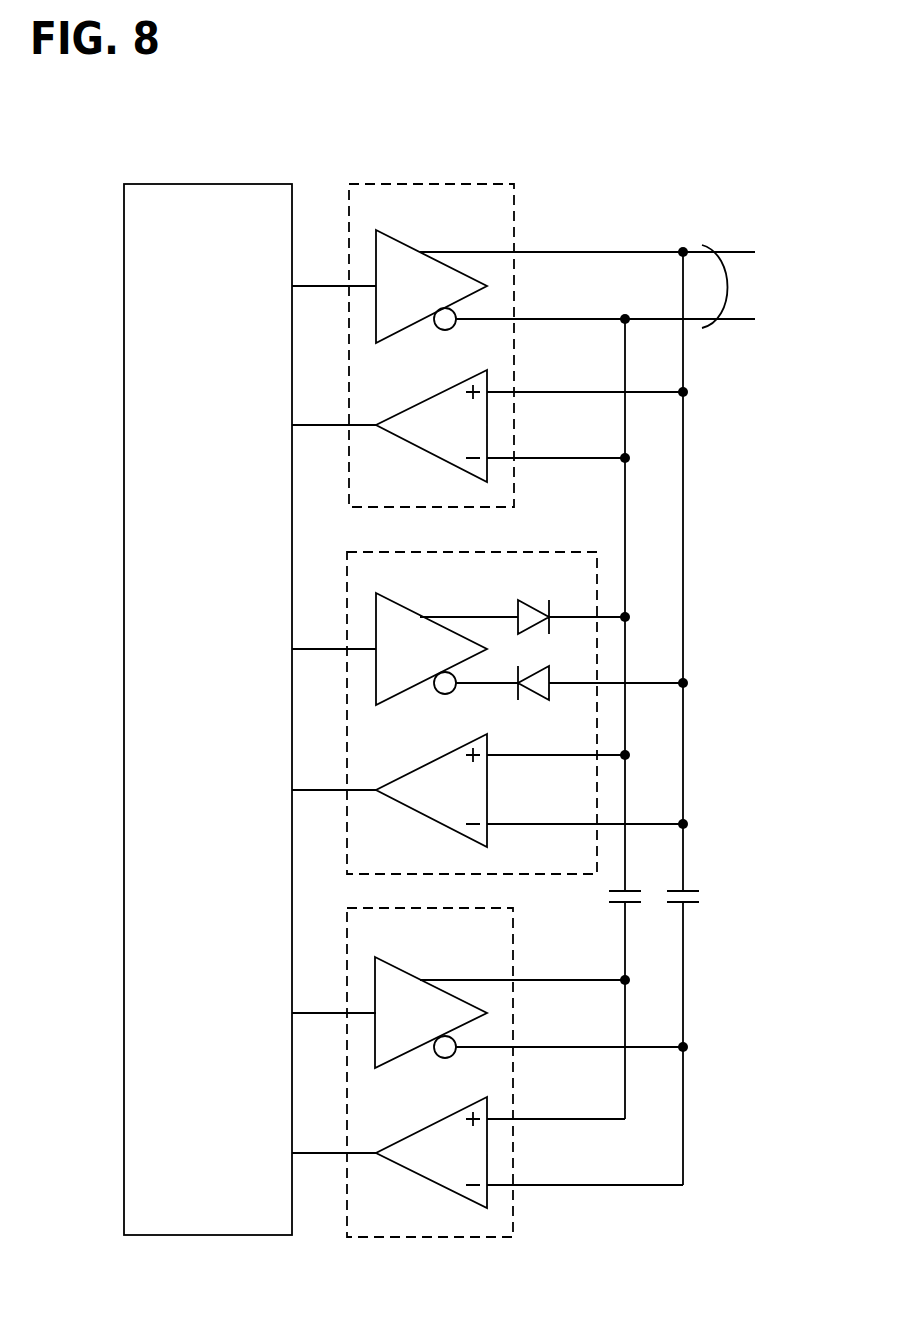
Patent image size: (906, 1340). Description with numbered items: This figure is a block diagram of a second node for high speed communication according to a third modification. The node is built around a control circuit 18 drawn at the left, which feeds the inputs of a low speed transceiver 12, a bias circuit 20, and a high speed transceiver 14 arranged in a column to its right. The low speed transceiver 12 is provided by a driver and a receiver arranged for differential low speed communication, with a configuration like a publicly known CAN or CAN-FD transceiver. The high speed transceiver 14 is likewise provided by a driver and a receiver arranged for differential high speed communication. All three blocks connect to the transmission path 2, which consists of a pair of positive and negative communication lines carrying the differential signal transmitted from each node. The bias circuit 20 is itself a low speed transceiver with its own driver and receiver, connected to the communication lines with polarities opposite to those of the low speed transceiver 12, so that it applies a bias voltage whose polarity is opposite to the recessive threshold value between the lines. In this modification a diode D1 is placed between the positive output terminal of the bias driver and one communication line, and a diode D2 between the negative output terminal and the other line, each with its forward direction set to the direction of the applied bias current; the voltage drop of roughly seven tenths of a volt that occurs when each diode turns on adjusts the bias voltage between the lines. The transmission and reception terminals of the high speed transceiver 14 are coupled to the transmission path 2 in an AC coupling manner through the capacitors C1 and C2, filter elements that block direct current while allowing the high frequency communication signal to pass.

The control circuit 18 is at (235, 184).
The low speed transceiver 12 is at (460, 184).
The bias circuit 20 is at (515, 698).
The high speed transceiver 14 is at (458, 908).
The transmission path 2 is at (725, 245).
The diode D1 is at (533, 603).
The diode D2 is at (533, 671).
The capacitor C1 is at (637, 882).
The capacitor C2 is at (694, 882).